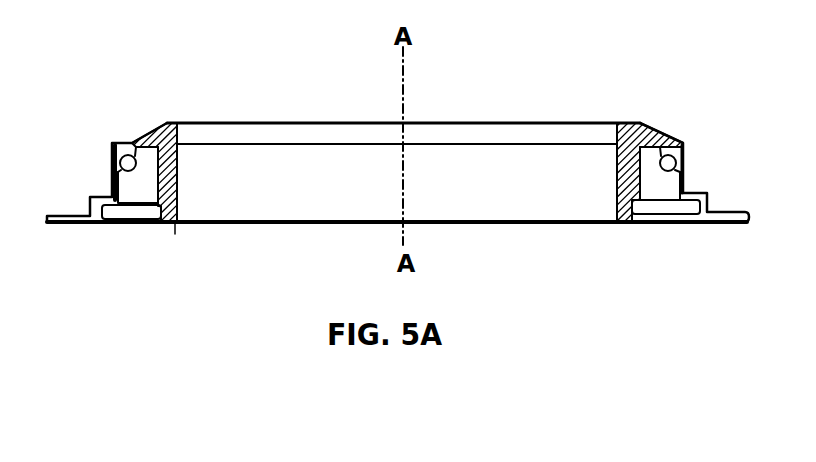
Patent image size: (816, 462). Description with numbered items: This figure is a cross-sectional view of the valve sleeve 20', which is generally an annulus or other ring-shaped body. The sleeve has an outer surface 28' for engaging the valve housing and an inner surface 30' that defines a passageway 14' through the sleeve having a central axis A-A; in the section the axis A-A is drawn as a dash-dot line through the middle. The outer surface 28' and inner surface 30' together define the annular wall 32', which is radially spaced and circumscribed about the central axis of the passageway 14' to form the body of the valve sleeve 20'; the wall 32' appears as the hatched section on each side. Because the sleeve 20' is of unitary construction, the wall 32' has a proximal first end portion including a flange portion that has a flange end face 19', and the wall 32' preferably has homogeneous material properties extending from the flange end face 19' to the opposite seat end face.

The passageway 14' is at (403, 119).
The valve sleeve 20' is at (398, 128).
The annular wall 32' is at (410, 120).
The outer surface 28' is at (402, 122).
The inner surface 30' is at (637, 240).
The flange end face 19' is at (148, 248).